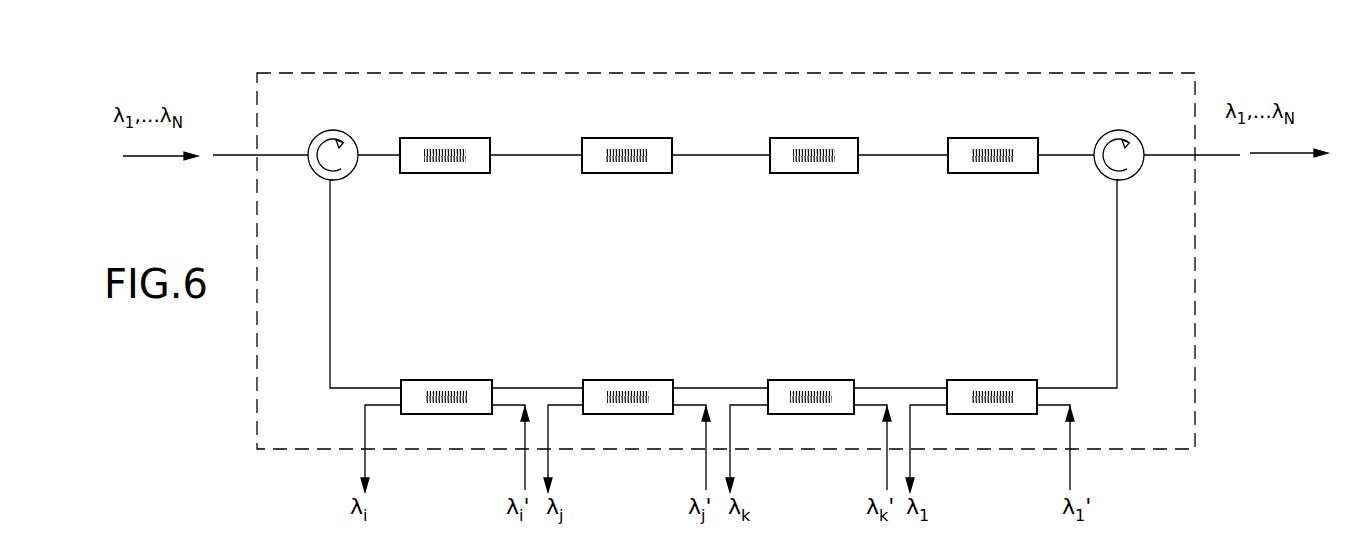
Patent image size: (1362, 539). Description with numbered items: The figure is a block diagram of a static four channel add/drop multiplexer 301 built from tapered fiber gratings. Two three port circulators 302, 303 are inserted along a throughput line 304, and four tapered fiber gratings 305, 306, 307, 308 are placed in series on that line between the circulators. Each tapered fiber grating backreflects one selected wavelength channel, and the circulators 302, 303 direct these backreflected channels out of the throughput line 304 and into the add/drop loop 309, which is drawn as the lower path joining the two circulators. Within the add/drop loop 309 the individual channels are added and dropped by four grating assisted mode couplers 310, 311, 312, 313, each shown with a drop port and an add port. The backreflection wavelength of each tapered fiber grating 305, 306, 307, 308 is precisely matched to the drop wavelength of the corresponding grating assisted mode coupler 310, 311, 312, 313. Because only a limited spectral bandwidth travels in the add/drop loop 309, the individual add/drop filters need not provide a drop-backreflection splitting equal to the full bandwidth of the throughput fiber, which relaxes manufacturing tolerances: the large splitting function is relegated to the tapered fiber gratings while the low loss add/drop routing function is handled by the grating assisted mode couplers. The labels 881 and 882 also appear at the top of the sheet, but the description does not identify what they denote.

The static add/drop multiplexer 301 is at (518, 73).
The three port circulator 302 is at (337, 130).
The three port circulator 303 is at (1119, 130).
The throughput line 304 is at (727, 153).
The tapered fiber grating 305 is at (430, 174).
The tapered fiber grating 306 is at (610, 174).
The tapered fiber grating 307 is at (790, 174).
The tapered fiber grating 308 is at (973, 174).
The add/drop loop 309 is at (330, 280).
The grating assisted mode coupler 310 is at (433, 379).
The grating assisted mode coupler 311 is at (613, 379).
The grating assisted mode coupler 312 is at (793, 379).
The grating assisted mode coupler 313 is at (978, 379).
The reference numeral from adjacent figure 881 is at (663, 9).
The reference numeral from adjacent figure 882 is at (848, 9).